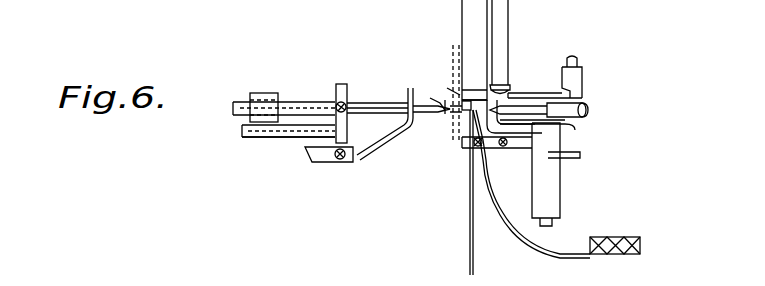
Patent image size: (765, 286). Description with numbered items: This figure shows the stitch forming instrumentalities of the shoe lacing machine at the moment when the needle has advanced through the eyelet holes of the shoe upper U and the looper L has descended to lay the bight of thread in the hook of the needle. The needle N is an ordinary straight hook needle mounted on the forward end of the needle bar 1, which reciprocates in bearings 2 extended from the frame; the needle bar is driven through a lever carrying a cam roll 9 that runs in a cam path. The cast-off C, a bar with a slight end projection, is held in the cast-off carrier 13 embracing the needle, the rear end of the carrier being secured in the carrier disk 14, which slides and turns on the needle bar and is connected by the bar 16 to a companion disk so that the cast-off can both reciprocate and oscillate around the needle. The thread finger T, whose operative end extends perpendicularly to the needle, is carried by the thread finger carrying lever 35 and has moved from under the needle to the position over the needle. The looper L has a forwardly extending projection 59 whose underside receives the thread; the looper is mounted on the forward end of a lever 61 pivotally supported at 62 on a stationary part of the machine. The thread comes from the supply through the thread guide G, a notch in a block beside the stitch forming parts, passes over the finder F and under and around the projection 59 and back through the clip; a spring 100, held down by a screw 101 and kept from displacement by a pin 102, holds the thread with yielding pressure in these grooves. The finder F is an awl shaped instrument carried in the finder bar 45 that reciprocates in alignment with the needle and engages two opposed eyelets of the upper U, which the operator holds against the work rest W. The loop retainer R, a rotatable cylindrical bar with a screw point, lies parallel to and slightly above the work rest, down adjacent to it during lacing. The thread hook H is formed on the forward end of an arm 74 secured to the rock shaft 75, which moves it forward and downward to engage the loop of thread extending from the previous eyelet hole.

The needle bar 1 is at (228, 104).
The bearings 2 is at (245, 131).
The bar 16 is at (256, 138).
The cast-off carrier 13 is at (365, 110).
The carrier disk 14 is at (338, 84).
The thread finger carrying lever 35 is at (335, 158).
The projection 59 is at (476, 107).
The thread finger T is at (400, 131).
The cast-off C is at (447, 112).
The needle N is at (430, 98).
The looper L is at (447, 88).
The shoe upper U is at (460, 88).
The work rest W is at (467, 23).
The loop retainer R is at (505, 24).
The thread hook H is at (513, 95).
The arm 74 is at (545, 97).
The rock shaft 75 is at (580, 70).
The finder bar 45 is at (578, 108).
The finder F is at (538, 126).
The spring 100 is at (462, 140).
The cam roll 9 is at (470, 150).
The thread guide G is at (482, 146).
The screw 101 is at (511, 150).
The pin 102 is at (558, 251).
The lever 61 is at (560, 156).
The pivot 62 is at (552, 183).